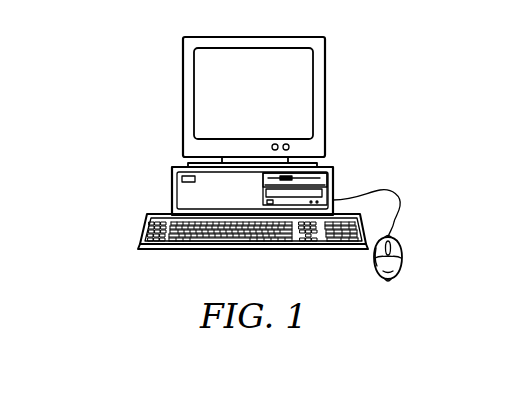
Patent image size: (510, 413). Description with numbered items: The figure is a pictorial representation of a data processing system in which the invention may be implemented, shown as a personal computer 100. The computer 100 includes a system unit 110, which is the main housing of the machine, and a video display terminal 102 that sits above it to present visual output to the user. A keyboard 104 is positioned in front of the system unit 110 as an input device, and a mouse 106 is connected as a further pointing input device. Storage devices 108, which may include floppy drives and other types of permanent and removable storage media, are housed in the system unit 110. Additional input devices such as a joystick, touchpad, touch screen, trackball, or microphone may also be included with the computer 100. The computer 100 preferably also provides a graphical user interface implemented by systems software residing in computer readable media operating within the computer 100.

The computer 100 is at (123, 87).
The video display terminal 102 is at (172, 187).
The keyboard 104 is at (325, 96).
The mouse 106 is at (163, 250).
The storage devices 108 is at (305, 178).
The system unit 110 is at (388, 280).